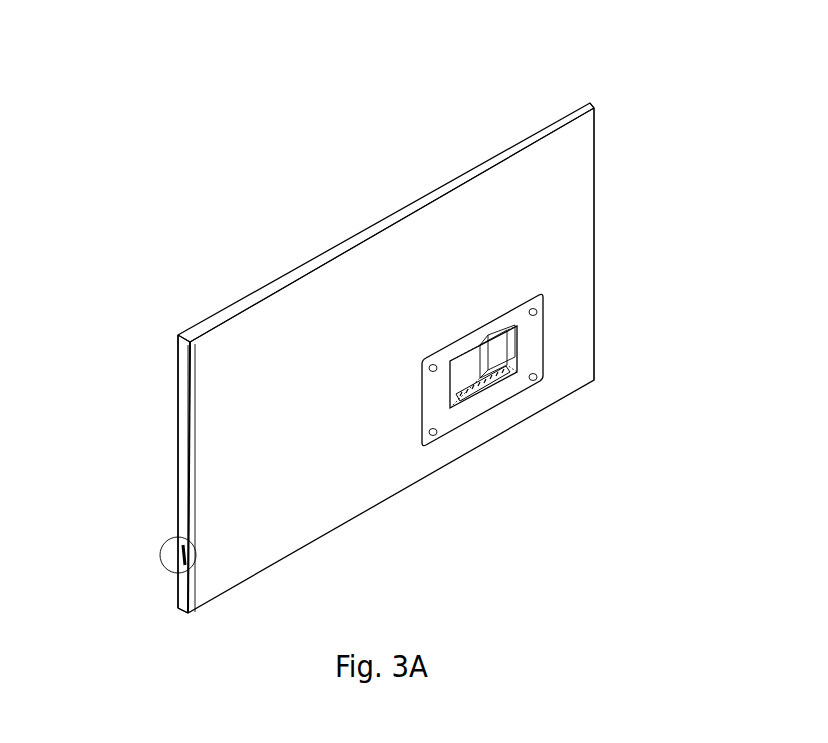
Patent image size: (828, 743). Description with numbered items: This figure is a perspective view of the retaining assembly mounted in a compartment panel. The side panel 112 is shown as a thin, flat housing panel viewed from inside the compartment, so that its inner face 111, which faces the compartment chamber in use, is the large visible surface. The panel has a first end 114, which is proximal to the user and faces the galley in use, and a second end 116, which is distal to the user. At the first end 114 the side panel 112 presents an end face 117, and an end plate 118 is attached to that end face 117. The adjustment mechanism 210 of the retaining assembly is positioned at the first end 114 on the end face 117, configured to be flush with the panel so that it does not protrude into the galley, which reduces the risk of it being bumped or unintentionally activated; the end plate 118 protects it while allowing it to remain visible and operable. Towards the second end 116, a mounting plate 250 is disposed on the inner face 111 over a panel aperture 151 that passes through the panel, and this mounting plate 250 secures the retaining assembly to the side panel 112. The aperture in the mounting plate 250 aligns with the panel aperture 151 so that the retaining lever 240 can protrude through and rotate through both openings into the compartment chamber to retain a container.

The inner face 111 is at (308, 305).
The side panel 112 is at (447, 222).
The first end 114 is at (185, 322).
The second end 116 is at (572, 100).
The end face 117 is at (180, 487).
The end plate 118 is at (178, 410).
The panel aperture 151 is at (460, 377).
The adjustment mechanism 210 is at (178, 557).
The retaining lever 240 is at (490, 358).
The mounting plate 250 is at (532, 329).